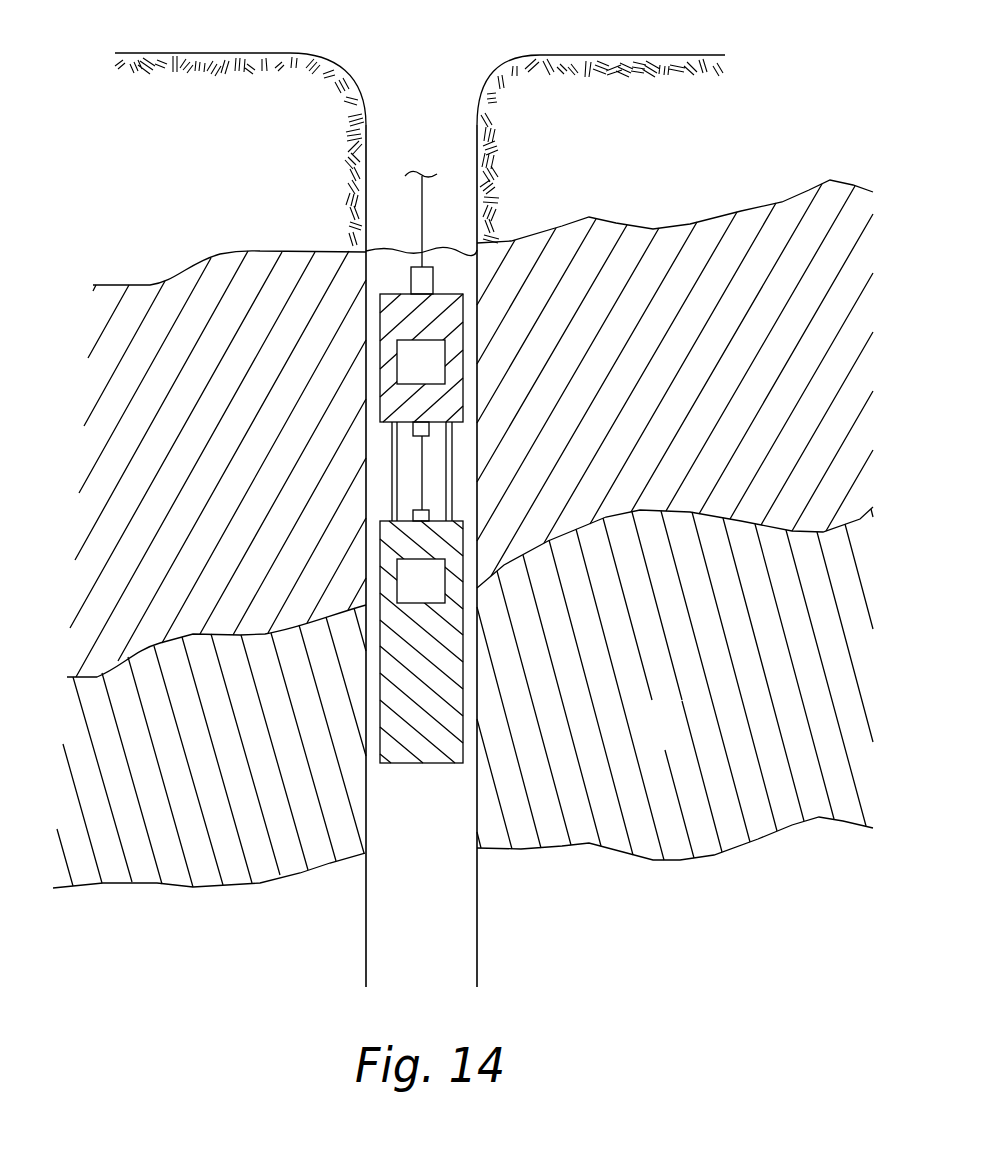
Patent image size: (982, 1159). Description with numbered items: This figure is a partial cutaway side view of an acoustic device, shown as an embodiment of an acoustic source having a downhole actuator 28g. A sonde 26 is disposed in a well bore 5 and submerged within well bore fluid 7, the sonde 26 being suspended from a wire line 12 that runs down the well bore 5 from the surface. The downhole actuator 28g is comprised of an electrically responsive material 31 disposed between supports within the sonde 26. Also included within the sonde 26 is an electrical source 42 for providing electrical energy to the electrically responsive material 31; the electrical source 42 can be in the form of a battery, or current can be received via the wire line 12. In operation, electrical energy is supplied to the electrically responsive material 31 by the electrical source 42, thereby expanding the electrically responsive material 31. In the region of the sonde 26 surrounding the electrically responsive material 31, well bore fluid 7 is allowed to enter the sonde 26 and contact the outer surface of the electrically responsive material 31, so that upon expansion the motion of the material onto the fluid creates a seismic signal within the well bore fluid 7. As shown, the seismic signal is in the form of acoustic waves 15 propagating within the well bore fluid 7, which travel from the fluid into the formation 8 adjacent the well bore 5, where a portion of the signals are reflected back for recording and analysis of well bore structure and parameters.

The well bore 5 is at (441, 101).
The well bore fluid 7 is at (390, 269).
The formation 8 is at (672, 741).
The wire line 12 is at (424, 188).
The acoustic waves 15 is at (486, 470).
The sonde 26 is at (418, 764).
The downhole actuator 28g is at (355, 564).
The electrically responsive material 31 is at (422, 453).
The electrical source 42 is at (433, 377).